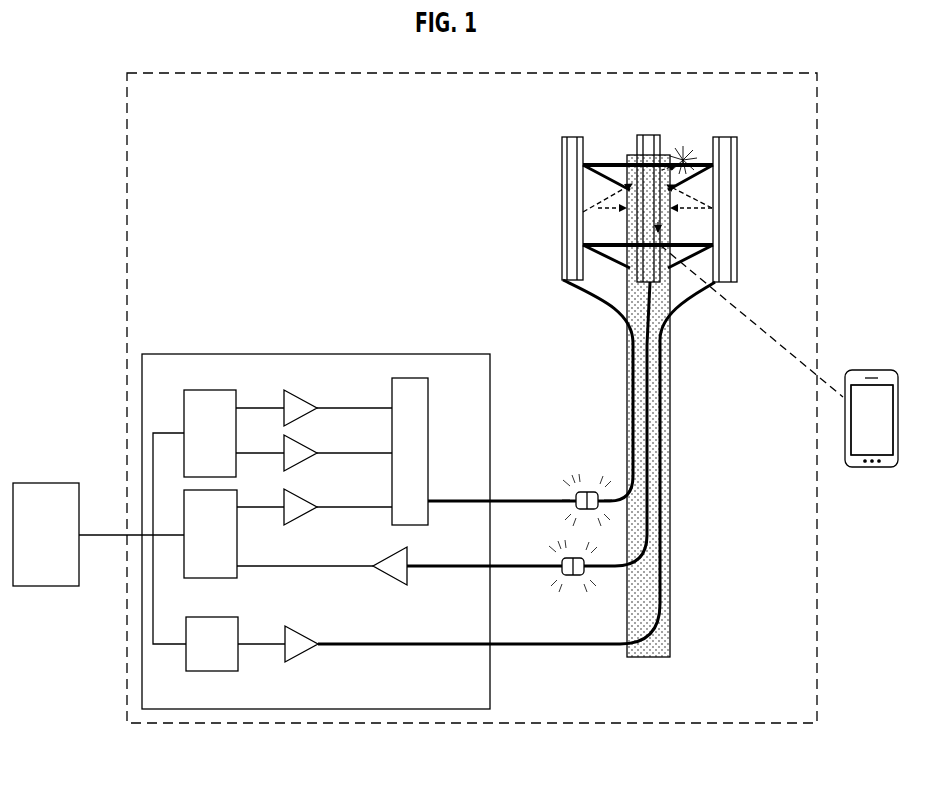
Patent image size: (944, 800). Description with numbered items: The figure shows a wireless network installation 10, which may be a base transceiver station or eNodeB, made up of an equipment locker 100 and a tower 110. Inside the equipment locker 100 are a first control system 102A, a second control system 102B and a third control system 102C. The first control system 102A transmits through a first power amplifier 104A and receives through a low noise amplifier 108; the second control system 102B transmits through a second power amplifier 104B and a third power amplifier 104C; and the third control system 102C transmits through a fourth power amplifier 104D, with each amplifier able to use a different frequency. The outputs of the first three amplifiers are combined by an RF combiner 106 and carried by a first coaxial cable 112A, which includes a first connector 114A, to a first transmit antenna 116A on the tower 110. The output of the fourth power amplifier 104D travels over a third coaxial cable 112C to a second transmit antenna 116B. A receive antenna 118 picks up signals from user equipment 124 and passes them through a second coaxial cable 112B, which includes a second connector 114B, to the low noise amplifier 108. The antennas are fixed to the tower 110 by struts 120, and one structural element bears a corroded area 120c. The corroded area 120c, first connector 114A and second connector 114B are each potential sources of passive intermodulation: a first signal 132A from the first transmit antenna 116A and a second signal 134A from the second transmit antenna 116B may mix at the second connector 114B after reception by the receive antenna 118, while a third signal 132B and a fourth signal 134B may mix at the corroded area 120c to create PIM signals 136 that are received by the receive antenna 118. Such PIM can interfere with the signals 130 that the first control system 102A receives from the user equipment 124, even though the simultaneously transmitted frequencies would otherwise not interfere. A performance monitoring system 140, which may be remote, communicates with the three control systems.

The wireless network installation 10 is at (155, 73).
The equipment locker 100 is at (197, 354).
The first control system 102A is at (215, 578).
The second control system 102B is at (212, 390).
The third control system 102C is at (212, 671).
The first power amplifier 104A is at (305, 499).
The second power amplifier 104B is at (305, 445).
The third power amplifier 104C is at (305, 400).
The fourth power amplifier 104D is at (310, 636).
The RF combiner 106 is at (430, 440).
The low noise amplifier 108 is at (378, 560).
The tower 110 is at (673, 600).
The first coaxial cable 112A is at (607, 303).
The second coaxial cable 112B is at (600, 560).
The third coaxial cable 112C is at (580, 646).
The first connector 114A is at (581, 490).
The second connector 114B is at (565, 580).
The first transmit antenna 116A is at (562, 137).
The second transmit antenna 116B is at (737, 137).
The receive antenna 118 is at (645, 135).
The struts 120 is at (612, 163).
The corroded area 120c is at (688, 152).
The user equipment 124 is at (858, 468).
The signals 130 is at (843, 375).
The first signal 132A is at (598, 209).
The third signal 132B is at (586, 211).
The second signal 134A is at (712, 208).
The fourth signal 134B is at (714, 190).
The PIM signals 136 is at (664, 218).
The performance monitoring system 140 is at (45, 586).